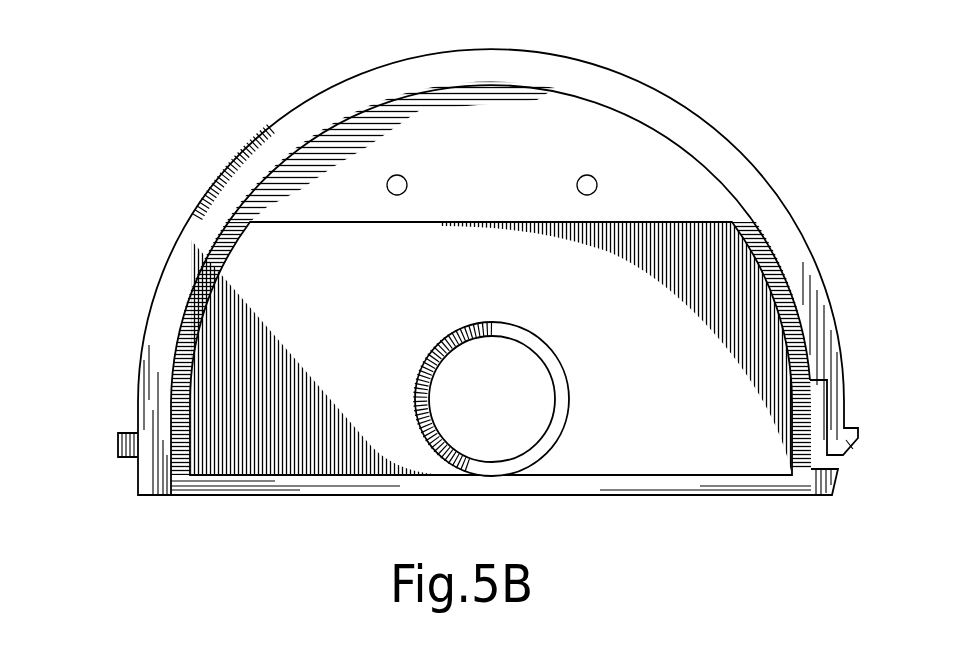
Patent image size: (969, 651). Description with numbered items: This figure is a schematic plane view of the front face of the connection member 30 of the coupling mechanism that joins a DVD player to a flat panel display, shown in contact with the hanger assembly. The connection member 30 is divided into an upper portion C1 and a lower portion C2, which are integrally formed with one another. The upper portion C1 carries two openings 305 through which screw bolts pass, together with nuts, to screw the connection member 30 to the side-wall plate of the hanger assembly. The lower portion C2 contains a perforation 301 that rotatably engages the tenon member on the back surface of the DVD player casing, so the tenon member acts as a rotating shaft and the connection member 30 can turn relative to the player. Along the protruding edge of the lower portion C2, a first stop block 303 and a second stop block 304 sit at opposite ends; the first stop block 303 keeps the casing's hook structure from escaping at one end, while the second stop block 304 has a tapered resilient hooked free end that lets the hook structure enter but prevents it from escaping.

The connection member 30 is at (746, 182).
The upper portion C1 is at (627, 143).
The lower portion C2 is at (647, 432).
The perforation 301 is at (498, 435).
The first stop block 303 is at (130, 432).
The second stop block 304 is at (842, 437).
The openings 305 is at (587, 183).